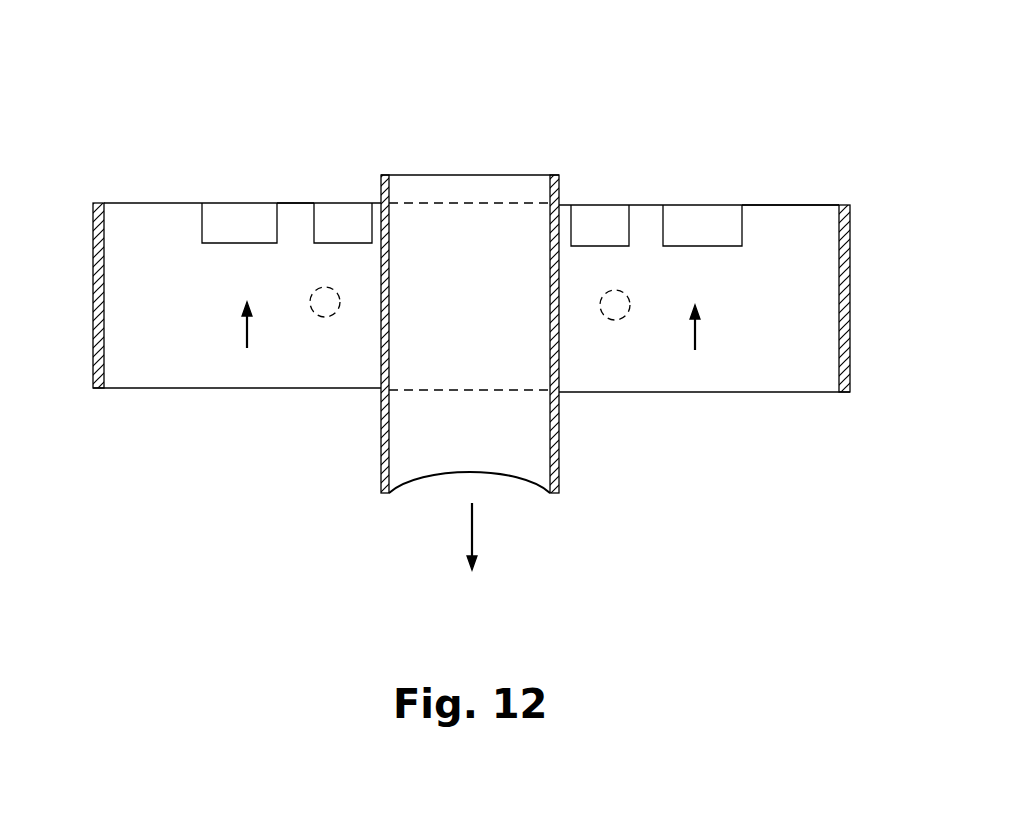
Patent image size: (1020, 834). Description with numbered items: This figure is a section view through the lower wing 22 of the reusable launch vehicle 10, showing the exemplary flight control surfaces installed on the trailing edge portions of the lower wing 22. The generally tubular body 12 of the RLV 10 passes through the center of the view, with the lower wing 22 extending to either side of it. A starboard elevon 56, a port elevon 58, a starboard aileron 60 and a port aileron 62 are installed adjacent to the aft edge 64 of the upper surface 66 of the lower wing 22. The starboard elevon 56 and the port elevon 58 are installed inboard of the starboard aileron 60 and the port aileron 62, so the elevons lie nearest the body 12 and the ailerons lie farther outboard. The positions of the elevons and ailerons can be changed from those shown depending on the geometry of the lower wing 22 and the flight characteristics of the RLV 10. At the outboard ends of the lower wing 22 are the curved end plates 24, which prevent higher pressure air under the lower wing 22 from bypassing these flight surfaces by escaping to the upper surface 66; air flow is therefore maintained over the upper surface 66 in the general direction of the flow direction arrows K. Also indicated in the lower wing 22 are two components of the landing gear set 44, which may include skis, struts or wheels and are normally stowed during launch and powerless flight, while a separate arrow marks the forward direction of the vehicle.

The reusable launch vehicle 10 is at (667, 78).
The body 12 is at (382, 448).
The lower wing 22 is at (195, 390).
The curved end plates 24 is at (97, 282).
The landing gear set 44 is at (323, 315).
The starboard elevon 56 is at (333, 216).
The port elevon 58 is at (600, 217).
The starboard aileron 60 is at (236, 212).
The port aileron 62 is at (707, 216).
The aft edge 64 is at (296, 202).
The upper surface 66 is at (799, 222).